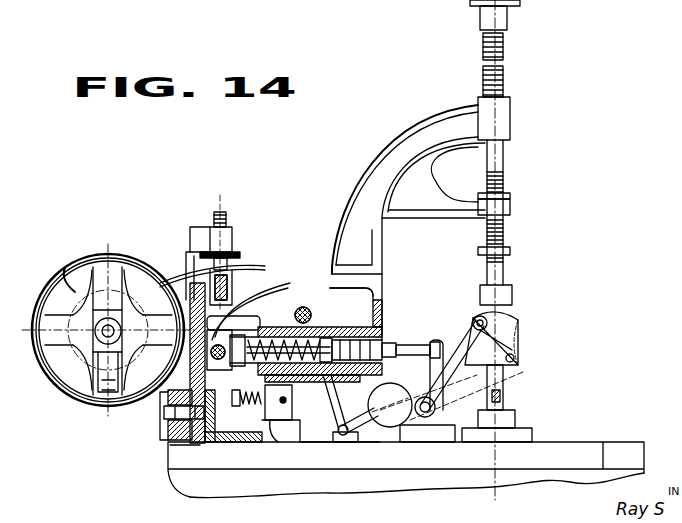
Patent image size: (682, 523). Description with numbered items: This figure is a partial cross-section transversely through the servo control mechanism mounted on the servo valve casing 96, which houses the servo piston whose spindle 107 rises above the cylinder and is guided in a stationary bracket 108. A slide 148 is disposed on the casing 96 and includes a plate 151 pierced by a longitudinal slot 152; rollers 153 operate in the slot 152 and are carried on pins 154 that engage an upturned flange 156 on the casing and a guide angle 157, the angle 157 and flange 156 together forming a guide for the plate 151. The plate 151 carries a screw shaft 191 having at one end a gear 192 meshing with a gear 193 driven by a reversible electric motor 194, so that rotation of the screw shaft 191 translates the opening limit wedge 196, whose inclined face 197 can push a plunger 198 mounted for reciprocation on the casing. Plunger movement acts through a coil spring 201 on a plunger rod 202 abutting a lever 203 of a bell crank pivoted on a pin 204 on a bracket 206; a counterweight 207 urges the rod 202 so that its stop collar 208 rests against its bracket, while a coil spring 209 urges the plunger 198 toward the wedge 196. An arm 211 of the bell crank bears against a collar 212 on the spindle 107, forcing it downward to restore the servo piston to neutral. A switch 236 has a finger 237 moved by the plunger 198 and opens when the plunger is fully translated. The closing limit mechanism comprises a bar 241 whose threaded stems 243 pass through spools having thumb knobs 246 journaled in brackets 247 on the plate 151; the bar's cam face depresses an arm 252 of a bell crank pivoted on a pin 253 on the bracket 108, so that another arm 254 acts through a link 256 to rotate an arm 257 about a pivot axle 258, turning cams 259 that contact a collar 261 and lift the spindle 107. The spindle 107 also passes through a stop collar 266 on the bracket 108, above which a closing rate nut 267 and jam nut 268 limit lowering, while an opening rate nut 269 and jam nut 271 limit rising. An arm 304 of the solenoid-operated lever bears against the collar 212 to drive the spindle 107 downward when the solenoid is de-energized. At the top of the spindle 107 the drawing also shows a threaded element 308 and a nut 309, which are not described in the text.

The servo valve casing 96 is at (593, 440).
The spindle 107 is at (487, 272).
The stationary bracket 108 is at (438, 114).
The slide 148 is at (197, 447).
The plate 151 is at (172, 268).
The longitudinal slot 152 is at (204, 443).
The rollers 153 is at (178, 430).
The pins 154 is at (164, 416).
The upturned flange 156 is at (166, 428).
The guide angle 157 is at (252, 444).
The screw shaft 191 is at (183, 345).
The gear 192 is at (236, 272).
The gear 193 is at (64, 270).
The reversible electric motor 194 is at (50, 280).
The opening limit wedge 196 is at (219, 357).
The inclined face 197 is at (235, 300).
The plunger 198 is at (263, 302).
The coil spring 201 is at (318, 376).
The plunger rod 202 is at (387, 328).
The lever 203 is at (441, 358).
The pin 204 is at (462, 440).
The bracket 206 is at (405, 442).
The counterweight 207 is at (417, 399).
The stop collar 208 is at (390, 344).
The coil spring 209 is at (343, 332).
The arm 211 is at (512, 380).
The collar 212 is at (516, 415).
The switch 236 is at (282, 442).
The finger 237 is at (246, 409).
The bar 241 is at (196, 240).
The threaded stems 243 is at (216, 213).
The thumb knobs 246 is at (233, 252).
The brackets 247 is at (182, 236).
The arm 252 is at (277, 296).
The pin 253 is at (303, 307).
The arm 254 is at (338, 388).
The link 256 is at (345, 436).
The arm 257 is at (522, 342).
The pivot axle 258 is at (476, 317).
The cams 259 is at (514, 320).
The collar 261 is at (512, 292).
The stop collar 266 is at (511, 211).
The closing rate nut 267 is at (510, 203).
The jam nut 268 is at (502, 188).
The opening rate nut 269 is at (508, 247).
The jam nut 271 is at (511, 255).
The arm 304 is at (503, 397).
The threaded stud 308 is at (506, 43).
The nut 309 is at (510, 8).